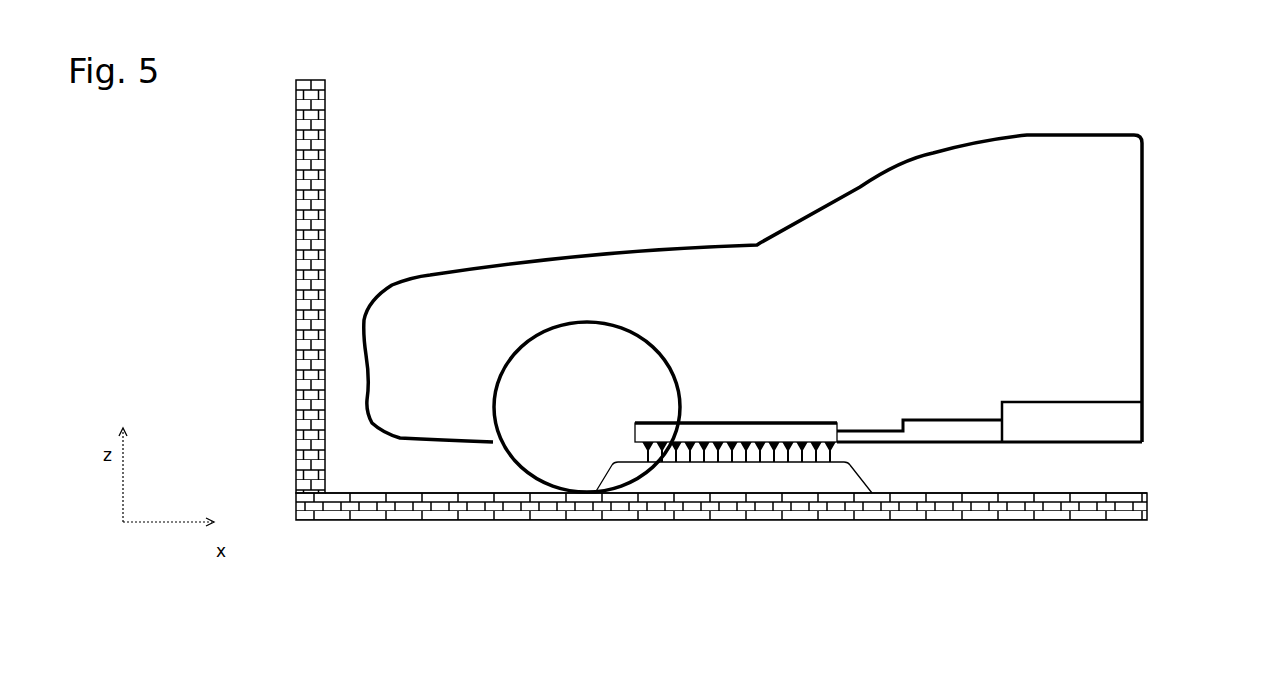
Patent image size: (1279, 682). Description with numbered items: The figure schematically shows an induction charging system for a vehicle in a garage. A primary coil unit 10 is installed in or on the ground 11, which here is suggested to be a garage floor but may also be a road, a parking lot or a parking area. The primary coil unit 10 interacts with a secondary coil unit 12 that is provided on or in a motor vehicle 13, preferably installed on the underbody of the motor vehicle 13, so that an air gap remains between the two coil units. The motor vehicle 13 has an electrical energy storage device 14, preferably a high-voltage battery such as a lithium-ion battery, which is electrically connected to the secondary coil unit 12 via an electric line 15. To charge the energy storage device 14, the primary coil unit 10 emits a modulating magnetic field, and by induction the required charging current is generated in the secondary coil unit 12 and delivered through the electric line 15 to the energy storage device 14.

The primary coil unit 10 is at (685, 478).
The ground 11 is at (1125, 494).
The secondary coil unit 12 is at (712, 432).
The motor vehicle 13 is at (995, 163).
The electrical energy storage device 14 is at (1120, 427).
The electric line 15 is at (931, 422).